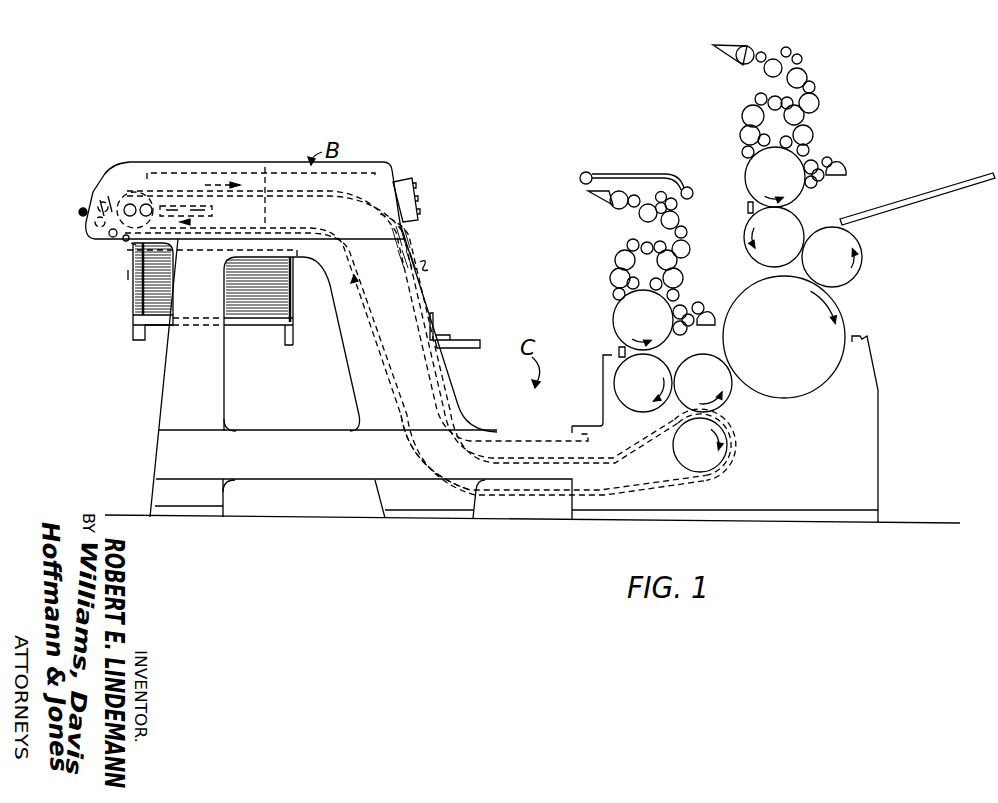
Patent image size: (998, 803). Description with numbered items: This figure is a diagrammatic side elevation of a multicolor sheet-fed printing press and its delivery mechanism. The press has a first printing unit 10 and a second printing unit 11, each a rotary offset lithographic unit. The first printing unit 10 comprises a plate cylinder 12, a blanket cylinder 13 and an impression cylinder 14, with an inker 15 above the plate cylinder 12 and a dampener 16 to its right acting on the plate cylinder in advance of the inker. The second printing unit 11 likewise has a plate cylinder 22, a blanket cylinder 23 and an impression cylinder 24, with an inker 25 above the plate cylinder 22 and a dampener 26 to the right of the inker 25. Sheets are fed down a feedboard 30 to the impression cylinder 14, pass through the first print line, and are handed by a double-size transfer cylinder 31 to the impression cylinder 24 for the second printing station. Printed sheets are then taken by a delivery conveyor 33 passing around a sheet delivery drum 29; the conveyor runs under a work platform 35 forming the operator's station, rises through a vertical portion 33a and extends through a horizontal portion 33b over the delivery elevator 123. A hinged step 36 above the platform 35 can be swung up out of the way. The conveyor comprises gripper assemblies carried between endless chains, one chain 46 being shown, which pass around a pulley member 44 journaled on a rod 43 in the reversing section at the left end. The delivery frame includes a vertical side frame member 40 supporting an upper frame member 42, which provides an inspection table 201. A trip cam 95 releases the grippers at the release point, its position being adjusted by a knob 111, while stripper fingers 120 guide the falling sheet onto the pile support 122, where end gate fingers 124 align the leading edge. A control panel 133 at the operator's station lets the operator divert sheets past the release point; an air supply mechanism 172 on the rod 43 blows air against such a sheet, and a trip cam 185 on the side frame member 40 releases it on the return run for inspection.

The first printing unit 10 is at (822, 146).
The second printing unit 11 is at (624, 233).
The plate cylinder 12 is at (757, 172).
The blanket cylinder 13 is at (757, 258).
The impression cylinder 14 is at (863, 258).
The inker 15 is at (801, 60).
The dampener 16 is at (845, 164).
The plate cylinder 22 is at (622, 322).
The blanket cylinder 23 is at (625, 390).
The impression cylinder 24 is at (732, 400).
The inker 25 is at (687, 232).
The dampener 26 is at (712, 312).
The sheet delivery drum 29 is at (733, 453).
The feedboard 30 is at (948, 195).
The double-size transfer cylinder 31 is at (847, 323).
The delivery conveyor 33 is at (694, 488).
The vertical portion 33a is at (392, 373).
The horizontal portion 33b is at (267, 172).
The work platform 35 is at (523, 432).
The hinged step 36 is at (465, 340).
The side frame member 40 is at (166, 455).
The upper frame member 42 is at (361, 172).
The rod 43 is at (97, 242).
The pulley member 44 is at (136, 190).
The endless chain 46 is at (418, 456).
The trip cam 95 is at (187, 252).
The knob 111 is at (80, 212).
The stripper fingers 120 is at (131, 246).
The pile support 122 is at (160, 328).
The delivery elevator 123 is at (303, 317).
The end gate fingers 124 is at (130, 278).
The control panel 133 is at (404, 180).
The air supply mechanism 172 is at (213, 215).
The trip cam 185 is at (372, 221).
The inspection table 201 is at (212, 172).